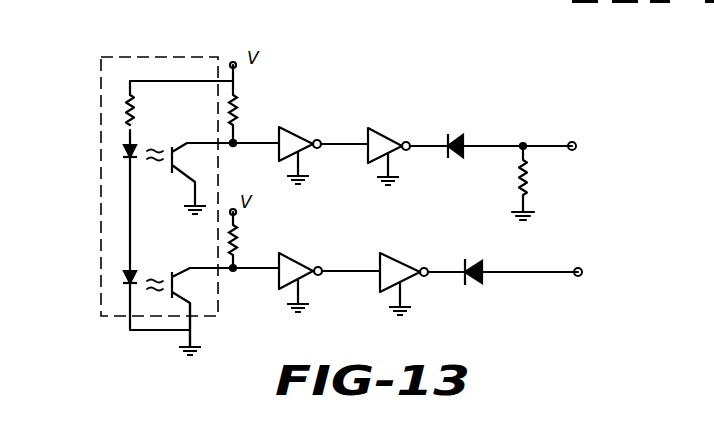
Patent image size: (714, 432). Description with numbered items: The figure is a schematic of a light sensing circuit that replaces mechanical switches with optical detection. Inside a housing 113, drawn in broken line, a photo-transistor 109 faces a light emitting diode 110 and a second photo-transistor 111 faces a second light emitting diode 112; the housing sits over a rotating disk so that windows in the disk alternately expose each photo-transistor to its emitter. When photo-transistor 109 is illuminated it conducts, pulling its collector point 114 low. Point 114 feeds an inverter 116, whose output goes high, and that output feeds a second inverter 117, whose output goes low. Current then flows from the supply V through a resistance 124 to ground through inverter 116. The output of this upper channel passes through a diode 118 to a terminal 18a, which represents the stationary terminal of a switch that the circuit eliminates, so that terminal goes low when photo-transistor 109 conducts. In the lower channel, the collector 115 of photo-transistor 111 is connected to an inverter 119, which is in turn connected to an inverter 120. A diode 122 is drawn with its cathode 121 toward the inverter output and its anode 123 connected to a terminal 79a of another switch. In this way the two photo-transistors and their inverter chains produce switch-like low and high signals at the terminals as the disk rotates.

The photo-transistor 109 is at (186, 161).
The light emitting diode 110 is at (105, 152).
The photo-transistor 111 is at (183, 284).
The light emitting diode 112 is at (100, 267).
The housing 113 is at (182, 53).
The point 114 is at (233, 142).
The collector 115 is at (238, 263).
The inverter 116 is at (295, 130).
The inverter 117 is at (384, 133).
The diode 118 is at (451, 124).
The inverter 119 is at (305, 254).
The inverter 120 is at (396, 257).
The cathode 121 is at (462, 286).
The diode 122 is at (521, 292).
The anode 123 is at (482, 283).
The resistance 124 is at (233, 102).
The output terminal 18a is at (572, 142).
The terminal 79a is at (578, 276).